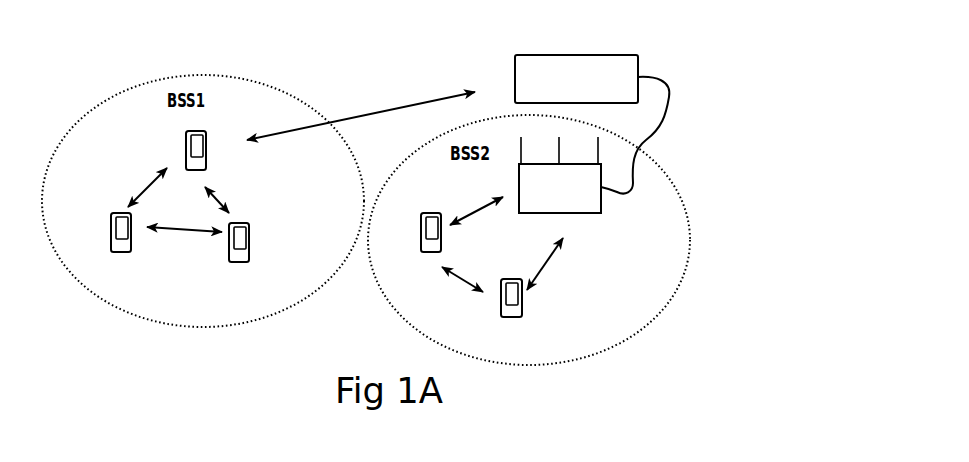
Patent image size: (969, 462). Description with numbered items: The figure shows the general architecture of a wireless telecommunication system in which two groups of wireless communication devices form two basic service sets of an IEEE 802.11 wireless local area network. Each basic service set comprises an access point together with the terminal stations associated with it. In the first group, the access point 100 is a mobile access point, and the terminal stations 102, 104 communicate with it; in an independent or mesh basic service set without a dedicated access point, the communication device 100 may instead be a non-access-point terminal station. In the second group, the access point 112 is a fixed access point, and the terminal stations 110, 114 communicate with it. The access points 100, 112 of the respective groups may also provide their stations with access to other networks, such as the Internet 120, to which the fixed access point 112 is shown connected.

The access point 100 is at (206, 155).
The terminal station 102 is at (131, 237).
The terminal station 104 is at (249, 247).
The terminal station 110 is at (441, 235).
The access point 112 is at (601, 195).
The terminal station 114 is at (522, 300).
The Internet 120 is at (578, 55).